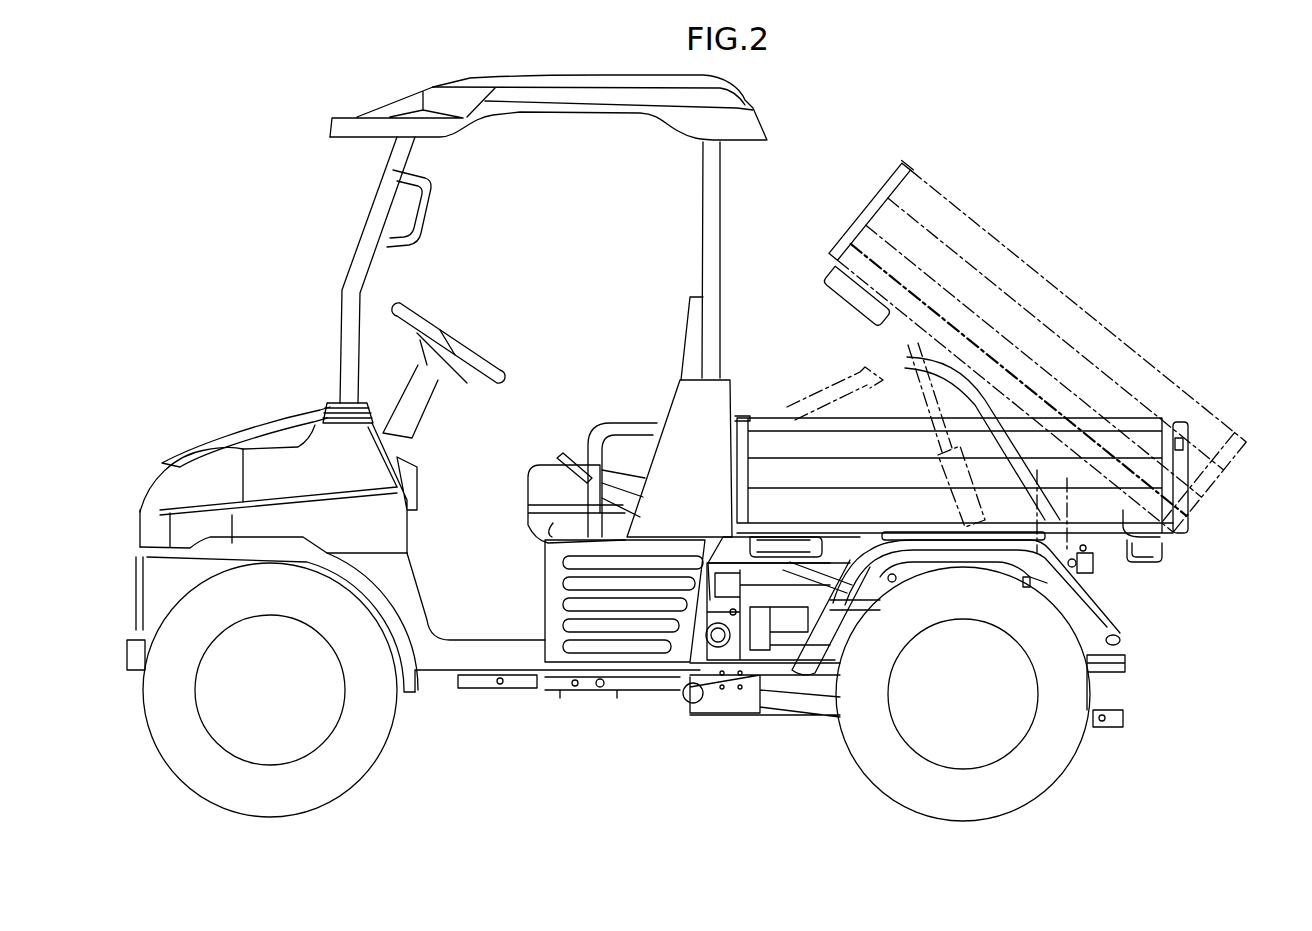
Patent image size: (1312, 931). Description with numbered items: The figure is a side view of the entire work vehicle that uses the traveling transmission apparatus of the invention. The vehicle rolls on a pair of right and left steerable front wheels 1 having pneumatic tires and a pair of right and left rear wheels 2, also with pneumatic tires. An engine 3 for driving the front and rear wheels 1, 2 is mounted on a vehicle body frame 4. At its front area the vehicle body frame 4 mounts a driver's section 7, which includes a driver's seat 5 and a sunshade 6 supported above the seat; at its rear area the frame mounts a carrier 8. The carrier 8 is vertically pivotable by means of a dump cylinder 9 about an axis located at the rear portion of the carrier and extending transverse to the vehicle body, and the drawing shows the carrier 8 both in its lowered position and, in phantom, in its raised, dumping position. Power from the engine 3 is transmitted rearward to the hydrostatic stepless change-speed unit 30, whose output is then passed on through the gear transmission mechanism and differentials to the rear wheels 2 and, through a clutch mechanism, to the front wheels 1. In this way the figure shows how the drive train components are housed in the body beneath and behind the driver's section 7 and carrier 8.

The steerable front wheels 1 is at (350, 777).
The rear wheels 2 is at (877, 775).
The engine 3 is at (755, 628).
The vehicle body frame 4 is at (838, 540).
The driver's seat 5 is at (538, 452).
The sunshade 6 is at (753, 128).
The driver's section 7 is at (408, 279).
The carrier 8 is at (1158, 382).
The dump cylinder 9 is at (945, 463).
The hydrostatic stepless change-speed unit 30 is at (1120, 672).